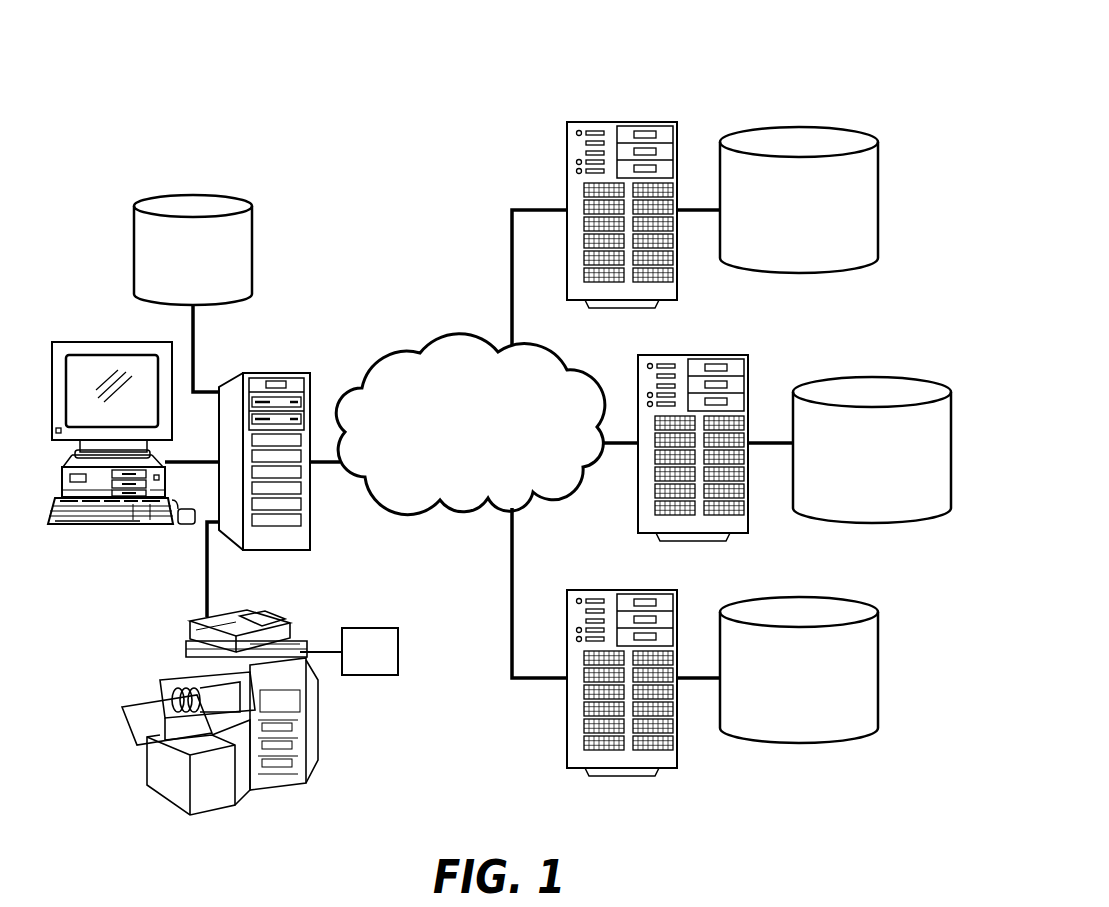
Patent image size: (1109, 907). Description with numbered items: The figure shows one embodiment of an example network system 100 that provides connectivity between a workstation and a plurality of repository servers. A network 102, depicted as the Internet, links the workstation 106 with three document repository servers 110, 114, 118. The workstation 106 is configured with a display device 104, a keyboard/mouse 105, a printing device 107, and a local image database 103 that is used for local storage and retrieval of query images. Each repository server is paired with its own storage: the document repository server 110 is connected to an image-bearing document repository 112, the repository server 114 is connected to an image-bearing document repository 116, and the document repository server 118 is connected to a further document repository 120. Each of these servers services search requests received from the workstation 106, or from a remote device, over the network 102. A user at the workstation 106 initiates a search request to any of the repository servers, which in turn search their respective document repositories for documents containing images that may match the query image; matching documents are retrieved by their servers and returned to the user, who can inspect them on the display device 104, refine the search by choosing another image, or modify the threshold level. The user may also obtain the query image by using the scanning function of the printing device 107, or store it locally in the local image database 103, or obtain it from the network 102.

The system 100 is at (838, 80).
The network 102 is at (457, 334).
The local image database 103 is at (183, 194).
The display device 104 is at (128, 341).
The keyboard/mouse 105 is at (95, 515).
The workstation 106 is at (306, 372).
The printing device 107 is at (156, 652).
The document repository server 110 is at (633, 121).
The image-bearing document repository 112 is at (798, 273).
The repository server 114 is at (718, 354).
The image-bearing document repository 116 is at (872, 524).
The document repository server 118 is at (633, 589).
The database 120 is at (798, 740).